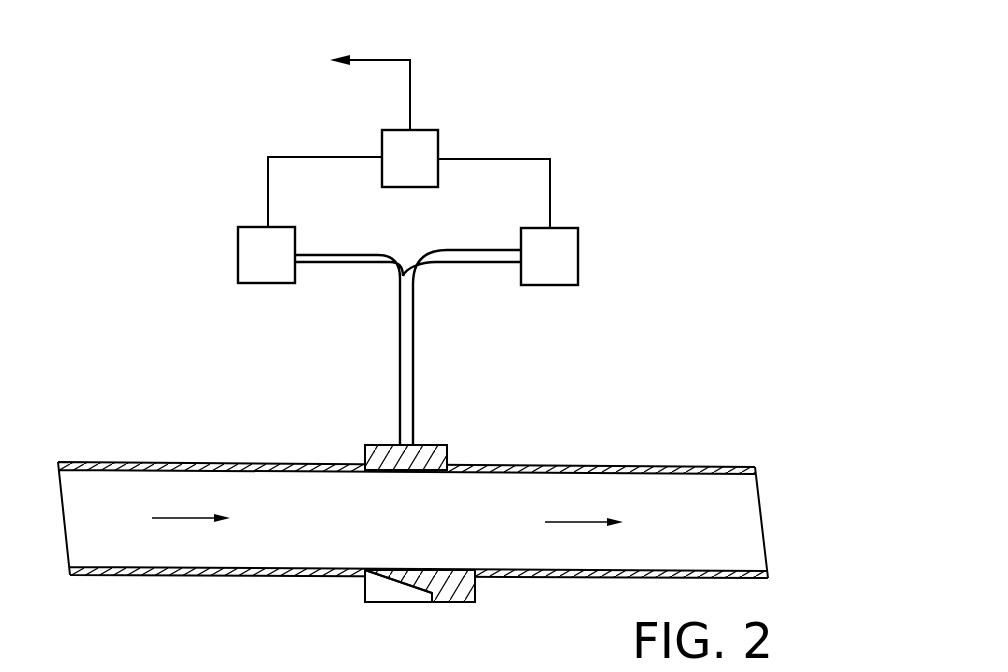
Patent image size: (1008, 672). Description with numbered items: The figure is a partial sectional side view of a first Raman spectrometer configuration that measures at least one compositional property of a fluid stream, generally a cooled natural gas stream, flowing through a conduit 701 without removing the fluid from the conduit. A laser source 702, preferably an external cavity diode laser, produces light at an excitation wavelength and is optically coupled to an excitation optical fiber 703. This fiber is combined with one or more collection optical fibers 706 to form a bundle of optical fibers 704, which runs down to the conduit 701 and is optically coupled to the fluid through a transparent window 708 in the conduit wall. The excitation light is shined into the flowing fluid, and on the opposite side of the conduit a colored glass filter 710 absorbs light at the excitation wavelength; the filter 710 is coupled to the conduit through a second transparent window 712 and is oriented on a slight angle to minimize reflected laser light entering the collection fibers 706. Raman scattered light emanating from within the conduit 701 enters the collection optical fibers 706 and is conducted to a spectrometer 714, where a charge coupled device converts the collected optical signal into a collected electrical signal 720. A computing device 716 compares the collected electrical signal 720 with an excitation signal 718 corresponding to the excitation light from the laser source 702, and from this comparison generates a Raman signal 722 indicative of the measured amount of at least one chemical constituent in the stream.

The conduit 701 is at (588, 463).
The laser source 702 is at (238, 255).
The excitation optical fiber 703 is at (332, 265).
The bundle of optical fibers 704 is at (415, 368).
The collection optical fibers 706 is at (483, 265).
The transparent window 708 is at (448, 445).
The colored glass filter 710 is at (402, 582).
The transparent window 712 is at (475, 590).
The spectrometer 714 is at (578, 257).
The computing device 716 is at (425, 130).
The excitation signal 718 is at (303, 157).
The collected electrical signal 720 is at (512, 158).
The Raman signal 722 is at (382, 60).